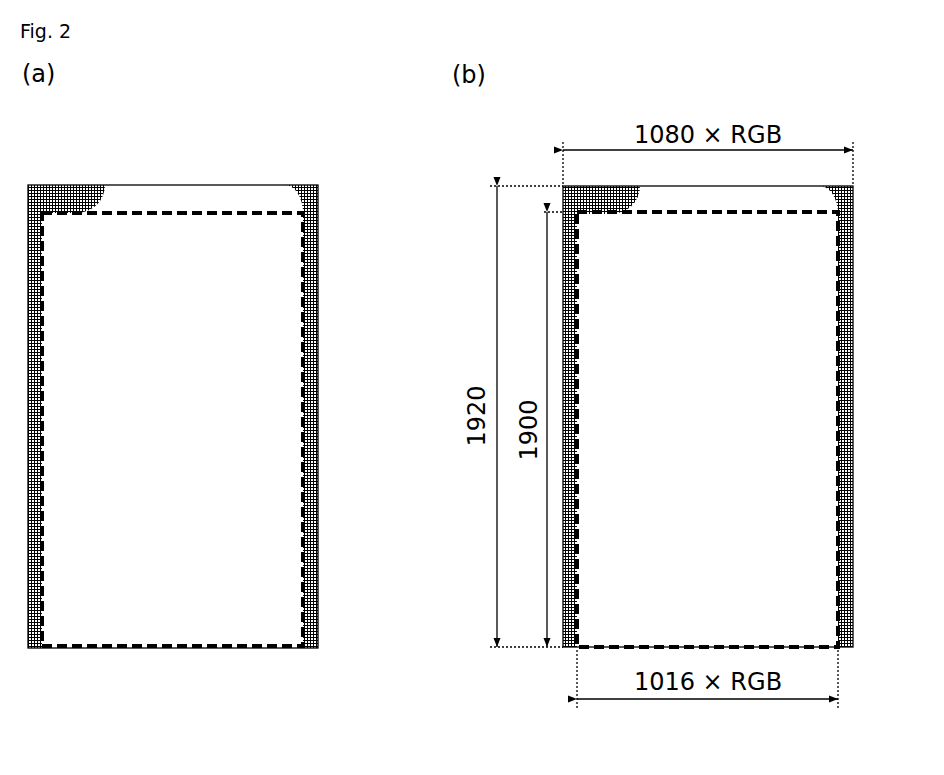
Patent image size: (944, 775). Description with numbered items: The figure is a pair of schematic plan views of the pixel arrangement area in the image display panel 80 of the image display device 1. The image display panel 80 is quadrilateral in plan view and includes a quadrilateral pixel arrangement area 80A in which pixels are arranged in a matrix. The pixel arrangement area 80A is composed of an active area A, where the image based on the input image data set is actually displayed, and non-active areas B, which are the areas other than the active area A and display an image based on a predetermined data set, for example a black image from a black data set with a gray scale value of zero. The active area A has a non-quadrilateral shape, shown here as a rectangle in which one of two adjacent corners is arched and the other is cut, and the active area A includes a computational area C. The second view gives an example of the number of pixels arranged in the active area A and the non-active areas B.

The image display device 1 is at (326, 172).
The image display panel 80 is at (234, 416).
The pixel arrangement area 80A is at (234, 416).
The active area A is at (272, 459).
The non-active areas B is at (314, 396).
The computational area C is at (313, 326).